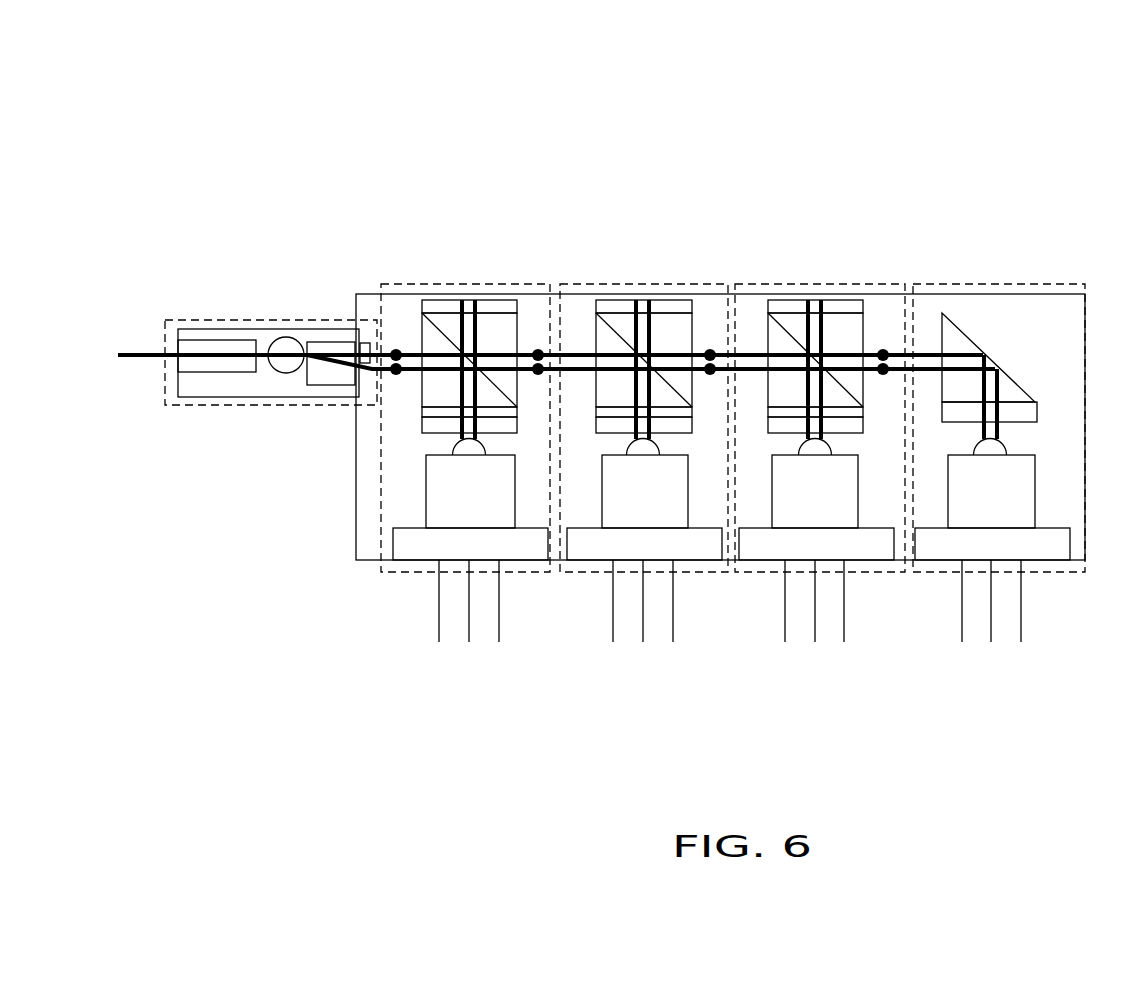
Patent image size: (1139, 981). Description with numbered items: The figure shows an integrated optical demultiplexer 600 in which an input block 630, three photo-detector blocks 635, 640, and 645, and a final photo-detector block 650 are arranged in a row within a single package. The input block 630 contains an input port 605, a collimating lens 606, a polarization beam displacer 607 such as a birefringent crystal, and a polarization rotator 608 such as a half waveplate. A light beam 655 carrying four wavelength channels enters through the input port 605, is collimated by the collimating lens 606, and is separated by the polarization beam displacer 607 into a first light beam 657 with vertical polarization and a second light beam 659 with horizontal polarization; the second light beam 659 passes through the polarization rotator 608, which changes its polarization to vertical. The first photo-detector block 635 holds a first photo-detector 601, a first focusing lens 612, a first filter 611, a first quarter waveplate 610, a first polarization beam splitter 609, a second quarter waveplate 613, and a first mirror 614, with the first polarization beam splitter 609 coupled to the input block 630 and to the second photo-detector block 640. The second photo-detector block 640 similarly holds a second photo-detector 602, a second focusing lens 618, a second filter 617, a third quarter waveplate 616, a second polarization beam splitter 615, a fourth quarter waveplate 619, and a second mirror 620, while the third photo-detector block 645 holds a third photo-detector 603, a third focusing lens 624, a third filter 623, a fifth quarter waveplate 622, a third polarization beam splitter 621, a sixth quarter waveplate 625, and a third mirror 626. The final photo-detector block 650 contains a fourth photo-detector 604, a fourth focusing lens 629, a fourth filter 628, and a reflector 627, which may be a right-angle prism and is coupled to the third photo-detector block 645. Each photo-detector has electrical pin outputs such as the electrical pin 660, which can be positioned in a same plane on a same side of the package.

The demultiplexer 600 is at (583, 62).
The first photo-detector 601 is at (470, 507).
The second photo-detector 602 is at (644, 507).
The third photo-detector 603 is at (816, 507).
The fourth photo-detector 604 is at (992, 507).
The input port 605 is at (205, 337).
The collimating lens 606 is at (281, 336).
The polarization beam displacer 607 is at (323, 338).
The polarization rotator 608 is at (360, 327).
The first polarization beam splitter 609 is at (421, 322).
The first quarter waveplate 610 is at (420, 410).
The first filter 611 is at (437, 433).
The first focusing lens 612 is at (463, 457).
The second quarter waveplate 613 is at (452, 300).
The first mirror 614 is at (482, 300).
The second polarization beam splitter 615 is at (593, 332).
The third quarter waveplate 616 is at (595, 411).
The second filter 617 is at (608, 433).
The second focusing lens 618 is at (637, 457).
The fourth quarter waveplate 619 is at (622, 300).
The second mirror 620 is at (650, 300).
The third polarization beam splitter 621 is at (766, 330).
The fifth quarter waveplate 622 is at (767, 411).
The third filter 623 is at (779, 433).
The third focusing lens 624 is at (810, 457).
The sixth quarter waveplate 625 is at (795, 300).
The third mirror 626 is at (822, 300).
The reflector 627 is at (965, 330).
The fourth filter 628 is at (942, 424).
The fourth focusing lens 629 is at (993, 458).
The input block 630 is at (166, 408).
The first photo-detector block 635 is at (497, 286).
The second photo-detector block 640 is at (670, 286).
The third photo-detector block 645 is at (851, 286).
The final photo-detector block 650 is at (1031, 286).
The light beam 655 is at (262, 360).
The first light beam 657 is at (372, 376).
The second light beam 659 is at (406, 346).
The electrical pin 660 is at (471, 644).